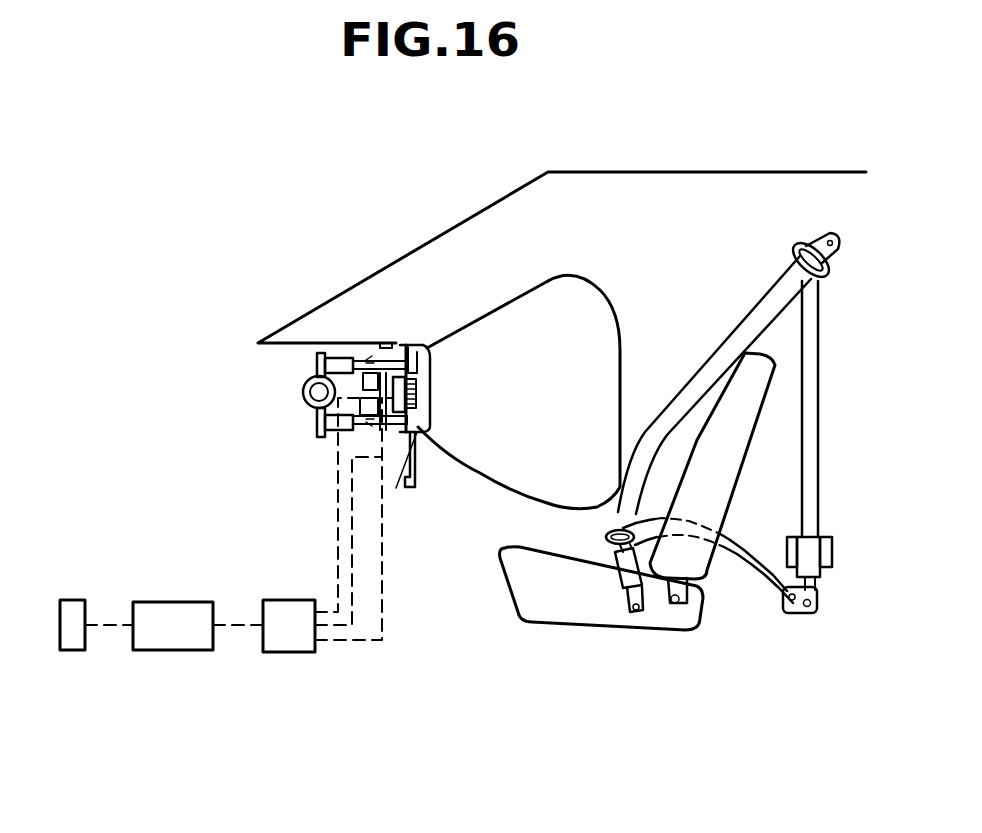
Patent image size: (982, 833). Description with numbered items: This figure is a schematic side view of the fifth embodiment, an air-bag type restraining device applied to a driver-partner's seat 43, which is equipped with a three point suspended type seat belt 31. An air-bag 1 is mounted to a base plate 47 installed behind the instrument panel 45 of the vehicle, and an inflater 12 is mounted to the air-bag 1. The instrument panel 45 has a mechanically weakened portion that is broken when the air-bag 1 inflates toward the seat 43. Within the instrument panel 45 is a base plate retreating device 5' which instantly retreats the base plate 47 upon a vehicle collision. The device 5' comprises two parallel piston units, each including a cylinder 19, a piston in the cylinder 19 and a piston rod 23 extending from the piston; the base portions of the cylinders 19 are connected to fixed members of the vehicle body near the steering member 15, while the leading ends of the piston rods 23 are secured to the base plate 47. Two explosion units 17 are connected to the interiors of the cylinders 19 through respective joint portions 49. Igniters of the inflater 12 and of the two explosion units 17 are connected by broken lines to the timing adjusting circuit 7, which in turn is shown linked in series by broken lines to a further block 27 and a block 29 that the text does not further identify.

The air-bag 1 is at (583, 279).
The seat belt 31 is at (723, 337).
The driver-partner's seat 43 is at (636, 637).
The air bag drive unit 29 is at (78, 651).
The determination circuit 27 is at (190, 651).
The timing adjusting circuit 7 is at (289, 653).
The cylinder 19 is at (338, 358).
The steering member 15 is at (303, 390).
The explosion unit 17 is at (362, 421).
The base plate retreating device 5' is at (355, 341).
The joint portion 49 is at (373, 362).
The piston rod 23 is at (394, 374).
The inflater 12 is at (420, 385).
The instrument panel 45 is at (428, 427).
The base plate 47 is at (421, 458).